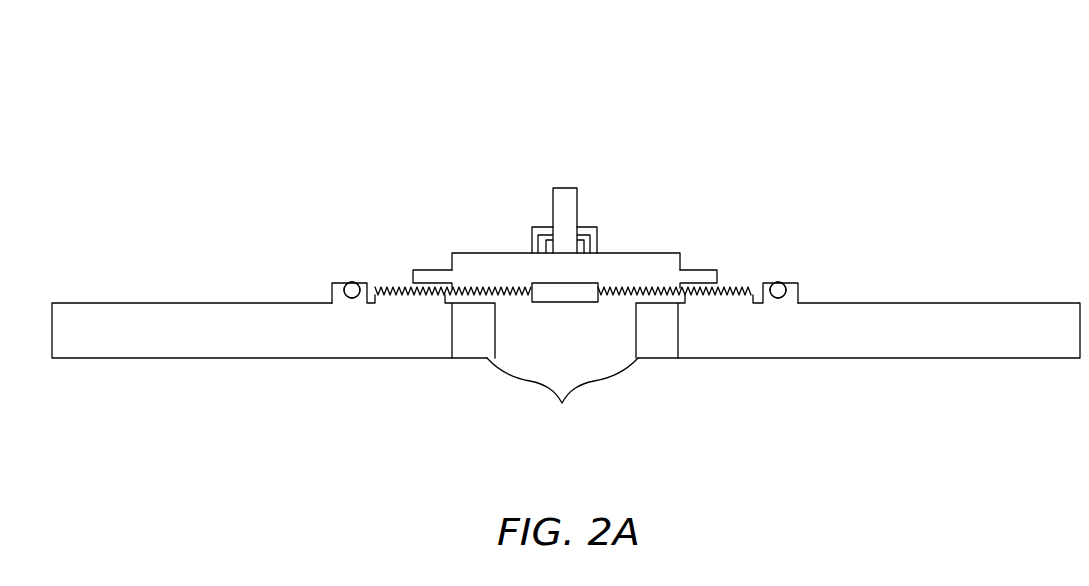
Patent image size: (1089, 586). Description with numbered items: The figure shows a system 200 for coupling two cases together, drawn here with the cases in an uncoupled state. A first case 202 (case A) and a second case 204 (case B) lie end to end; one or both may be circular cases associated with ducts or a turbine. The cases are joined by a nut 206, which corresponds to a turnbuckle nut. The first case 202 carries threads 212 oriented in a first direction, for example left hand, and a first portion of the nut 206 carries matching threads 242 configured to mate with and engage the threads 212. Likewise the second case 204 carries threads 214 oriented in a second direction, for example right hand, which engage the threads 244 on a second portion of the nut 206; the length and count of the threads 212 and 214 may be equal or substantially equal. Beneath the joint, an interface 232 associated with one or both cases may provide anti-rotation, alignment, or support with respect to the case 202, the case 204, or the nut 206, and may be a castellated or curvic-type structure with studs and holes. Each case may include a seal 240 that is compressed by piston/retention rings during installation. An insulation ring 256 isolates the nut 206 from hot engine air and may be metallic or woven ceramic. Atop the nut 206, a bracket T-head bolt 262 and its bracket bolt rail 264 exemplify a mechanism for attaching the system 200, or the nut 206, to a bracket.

The system 200 is at (845, 83).
The first case 202 is at (138, 338).
The second case 204 is at (963, 342).
The nut 206 is at (493, 252).
The threads 212 is at (410, 293).
The threads 214 is at (718, 293).
The interface 232 is at (562, 403).
The seal 240 is at (349, 283).
The threads 242 is at (492, 288).
The threads 244 is at (643, 289).
The insulation ring 256 is at (582, 288).
The bolt 262 is at (560, 188).
The bracket bolt rail 264 is at (588, 226).